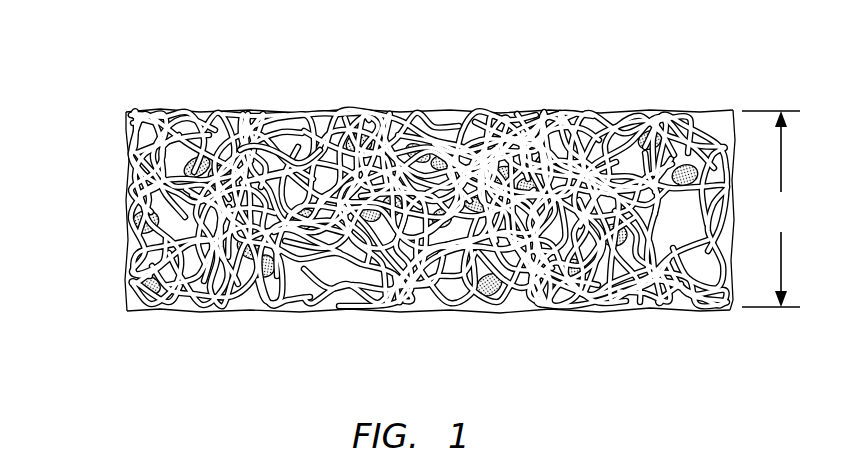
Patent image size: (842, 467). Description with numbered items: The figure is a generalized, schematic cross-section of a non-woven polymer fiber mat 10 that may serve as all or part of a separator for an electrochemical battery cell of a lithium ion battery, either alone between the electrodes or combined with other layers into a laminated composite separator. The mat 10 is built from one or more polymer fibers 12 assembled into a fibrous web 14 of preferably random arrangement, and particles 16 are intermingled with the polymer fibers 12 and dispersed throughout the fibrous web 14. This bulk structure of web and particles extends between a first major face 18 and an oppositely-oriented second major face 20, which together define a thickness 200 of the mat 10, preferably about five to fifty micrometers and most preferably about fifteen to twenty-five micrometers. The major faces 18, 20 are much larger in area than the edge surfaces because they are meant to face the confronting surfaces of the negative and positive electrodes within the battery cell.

The non-woven polymer fiber mat 10 is at (119, 88).
The polymer fibers 12 is at (130, 278).
The fibrous web 14 is at (268, 128).
The particles 16 is at (130, 220).
The first major face 18 is at (496, 110).
The second major face 20 is at (492, 317).
The thickness 200 is at (802, 226).